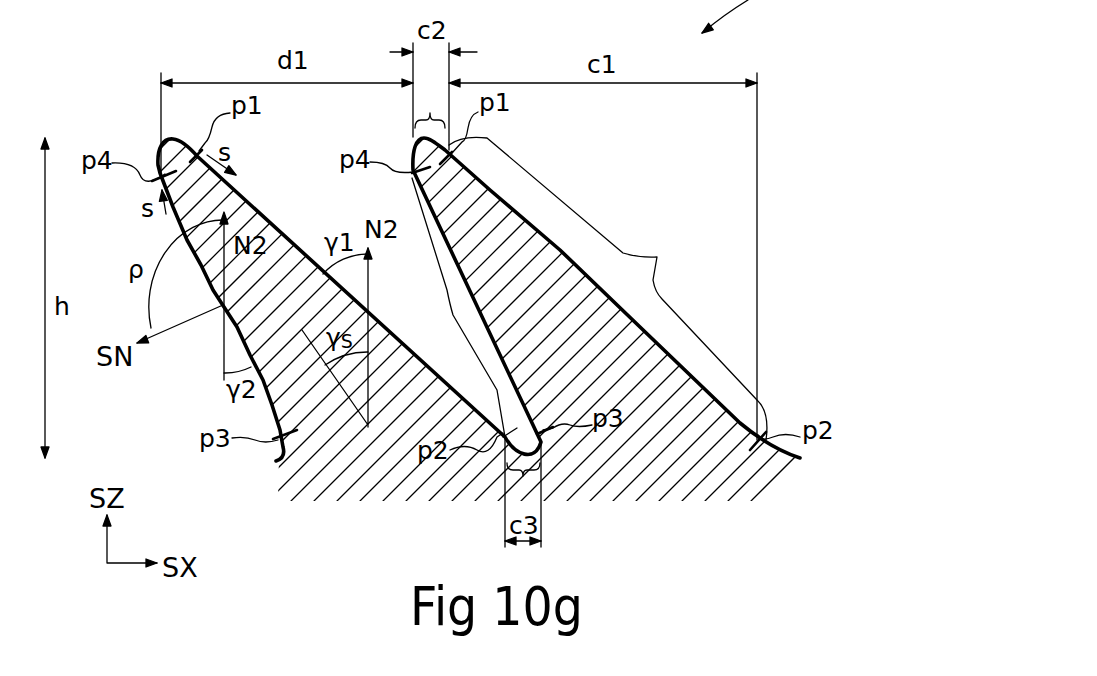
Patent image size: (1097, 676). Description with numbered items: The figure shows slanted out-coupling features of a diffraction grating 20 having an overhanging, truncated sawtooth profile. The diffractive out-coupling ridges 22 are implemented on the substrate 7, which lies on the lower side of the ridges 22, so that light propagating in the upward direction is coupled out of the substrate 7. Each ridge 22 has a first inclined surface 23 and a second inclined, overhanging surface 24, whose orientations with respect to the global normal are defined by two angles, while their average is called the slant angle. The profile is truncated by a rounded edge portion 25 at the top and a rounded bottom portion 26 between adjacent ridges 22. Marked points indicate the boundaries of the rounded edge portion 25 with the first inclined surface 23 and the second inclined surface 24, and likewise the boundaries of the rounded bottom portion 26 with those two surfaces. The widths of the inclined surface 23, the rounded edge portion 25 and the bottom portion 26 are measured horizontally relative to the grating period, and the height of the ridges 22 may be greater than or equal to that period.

The substrate 7 is at (782, 492).
The cutting tool / saw blade 20 is at (762, 0).
The ridge 22 is at (213, 198).
The first inclined surface 23 is at (657, 257).
The second inclined surface 24 is at (454, 320).
The rounded edge portion 25 is at (433, 106).
The rounded bottom portion 26 is at (524, 486).